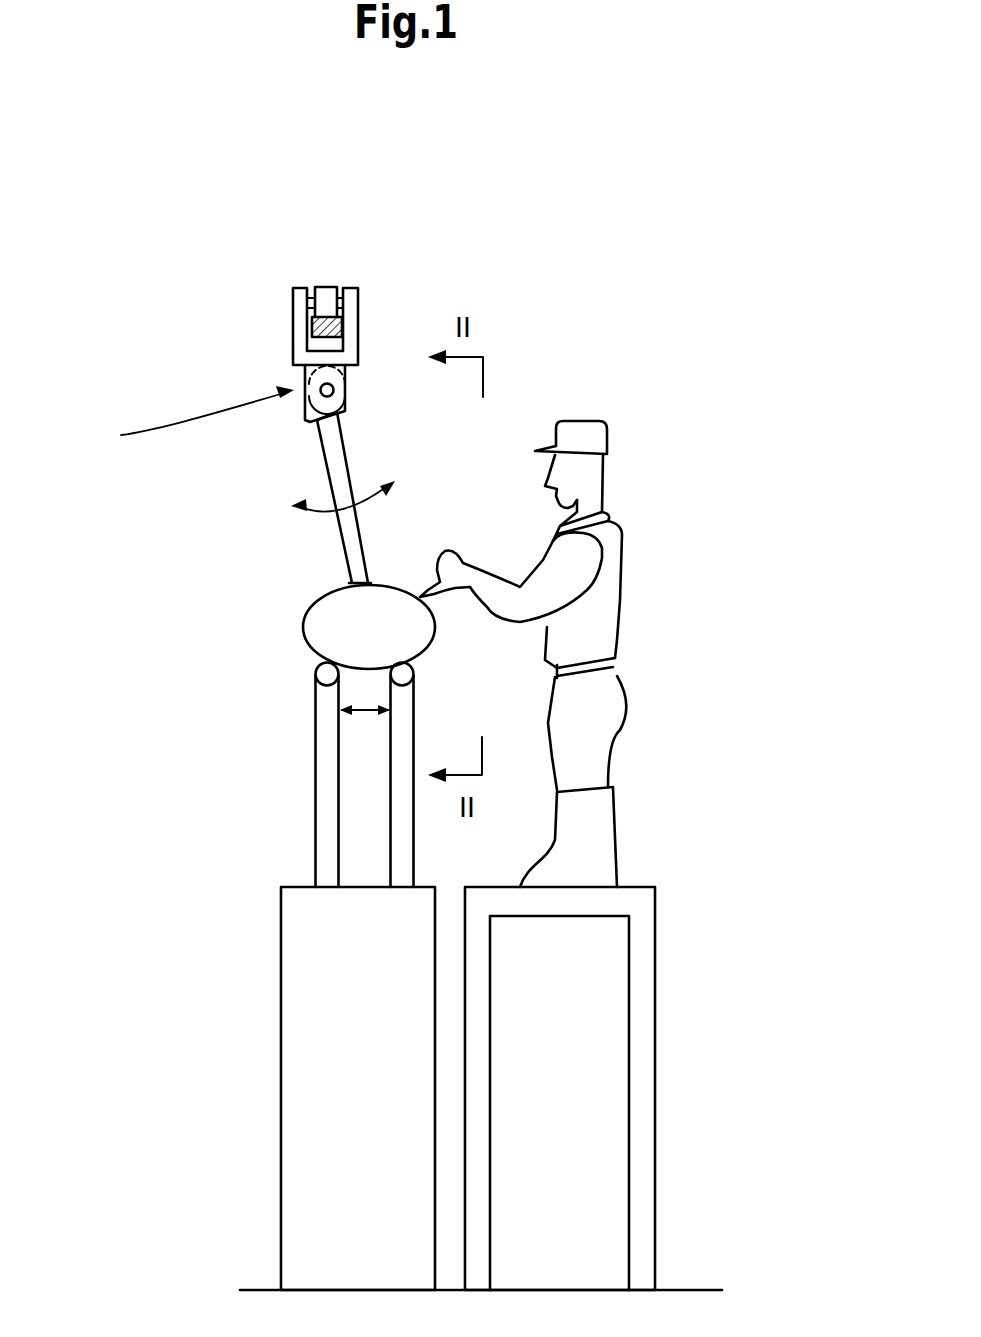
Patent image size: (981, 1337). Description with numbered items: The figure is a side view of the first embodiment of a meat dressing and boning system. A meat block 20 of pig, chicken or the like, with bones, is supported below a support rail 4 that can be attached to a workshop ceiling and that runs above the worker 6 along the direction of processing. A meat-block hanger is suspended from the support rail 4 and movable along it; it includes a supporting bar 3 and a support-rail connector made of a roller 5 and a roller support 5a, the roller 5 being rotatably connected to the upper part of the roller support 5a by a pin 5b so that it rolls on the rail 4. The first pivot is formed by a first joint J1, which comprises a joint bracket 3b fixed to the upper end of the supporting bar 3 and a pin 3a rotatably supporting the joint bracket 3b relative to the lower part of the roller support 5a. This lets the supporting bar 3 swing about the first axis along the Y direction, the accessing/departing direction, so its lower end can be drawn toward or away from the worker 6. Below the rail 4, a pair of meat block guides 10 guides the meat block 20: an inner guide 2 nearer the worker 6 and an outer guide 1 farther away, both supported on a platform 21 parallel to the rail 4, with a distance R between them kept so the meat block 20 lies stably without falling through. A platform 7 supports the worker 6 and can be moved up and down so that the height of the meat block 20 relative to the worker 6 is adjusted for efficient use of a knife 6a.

The outer guide 1 is at (313, 672).
The inner guide 2 is at (412, 672).
The supporting bar 3 is at (336, 458).
The pin 3a is at (335, 393).
The joint bracket 3b is at (310, 415).
The support rail 4 is at (310, 325).
The roller 5 is at (327, 287).
The roller support 5a is at (359, 332).
The pin 5b is at (341, 292).
The worker 6 is at (556, 654).
The knife 6a is at (427, 597).
The platform 7 is at (647, 887).
The meat block guides 10 is at (271, 748).
The meat block 20 is at (303, 631).
The platform 21 is at (359, 887).
The first joint J1 is at (188, 418).
The Y-direction Y is at (352, 496).
The distance R is at (365, 724).